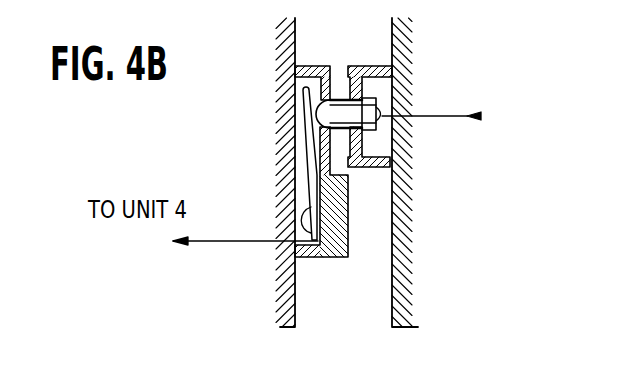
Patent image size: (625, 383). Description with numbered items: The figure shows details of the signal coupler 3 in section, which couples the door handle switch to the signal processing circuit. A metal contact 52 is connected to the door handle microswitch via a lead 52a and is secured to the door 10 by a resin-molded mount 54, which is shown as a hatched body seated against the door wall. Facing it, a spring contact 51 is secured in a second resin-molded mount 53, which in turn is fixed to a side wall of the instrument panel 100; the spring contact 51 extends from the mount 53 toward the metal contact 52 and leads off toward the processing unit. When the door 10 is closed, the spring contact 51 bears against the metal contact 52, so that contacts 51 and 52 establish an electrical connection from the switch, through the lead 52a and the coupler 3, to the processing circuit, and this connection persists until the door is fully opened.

The signal coupler 3 is at (254, 46).
The door 10 is at (403, 303).
The spring contact 51 is at (302, 97).
The metal contact 52 is at (336, 99).
The lead 52a is at (452, 116).
The resin-molded mount 53 is at (332, 258).
The resin-molded mount 54 is at (364, 65).
The instrument panel 100 is at (292, 283).